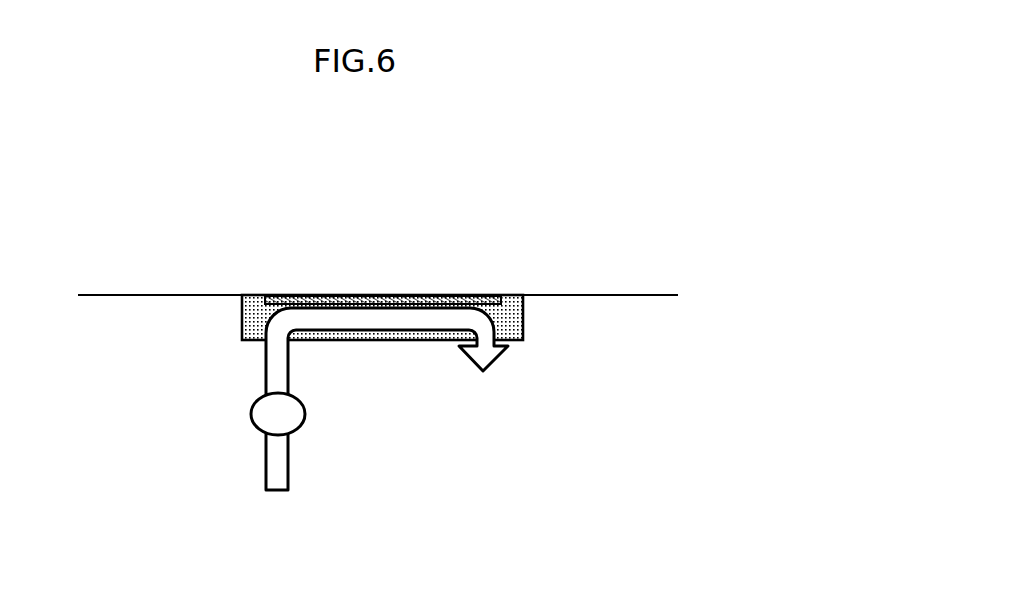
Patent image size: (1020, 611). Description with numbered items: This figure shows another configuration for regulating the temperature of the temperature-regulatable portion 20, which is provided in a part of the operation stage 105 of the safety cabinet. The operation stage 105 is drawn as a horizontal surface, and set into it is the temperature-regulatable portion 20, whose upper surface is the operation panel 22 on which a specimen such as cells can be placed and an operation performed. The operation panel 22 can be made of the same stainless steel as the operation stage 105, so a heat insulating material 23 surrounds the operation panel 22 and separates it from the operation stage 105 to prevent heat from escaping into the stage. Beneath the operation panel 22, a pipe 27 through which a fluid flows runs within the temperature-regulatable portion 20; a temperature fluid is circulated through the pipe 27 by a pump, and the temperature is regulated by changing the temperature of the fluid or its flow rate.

The temperature-regulatable portion 20 is at (471, 228).
The operation panel 22 is at (393, 290).
The heat insulating material 23 is at (255, 295).
The pipe 27 is at (383, 328).
The operation stage 105 is at (562, 303).